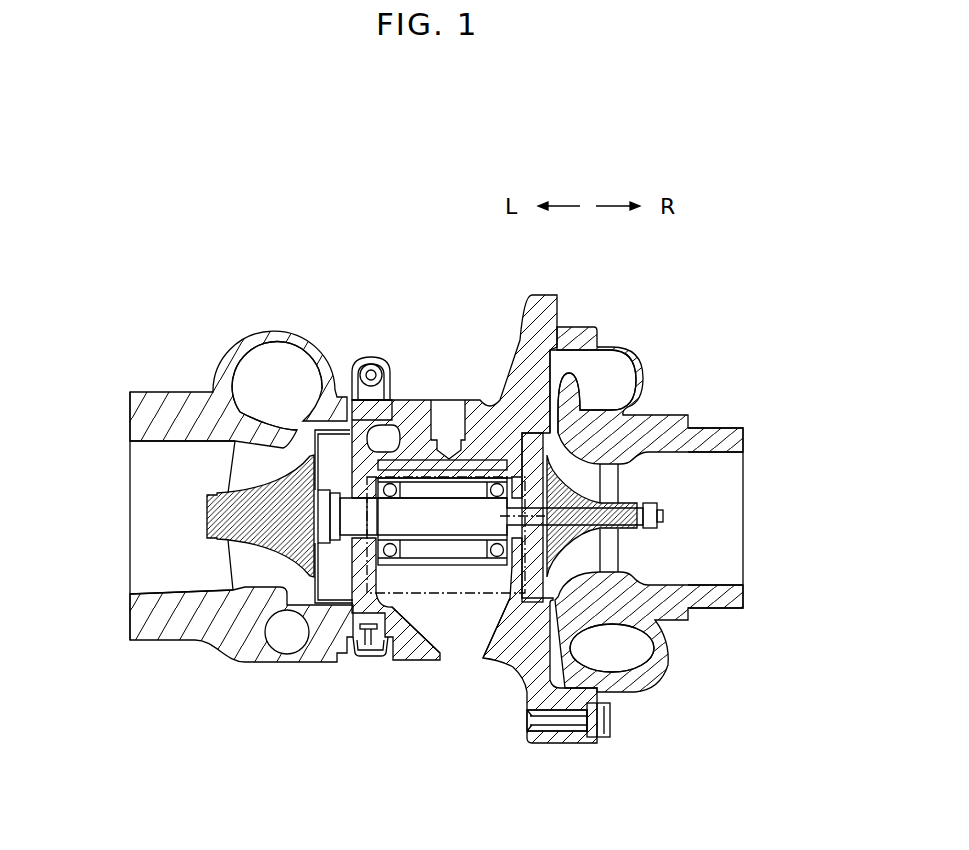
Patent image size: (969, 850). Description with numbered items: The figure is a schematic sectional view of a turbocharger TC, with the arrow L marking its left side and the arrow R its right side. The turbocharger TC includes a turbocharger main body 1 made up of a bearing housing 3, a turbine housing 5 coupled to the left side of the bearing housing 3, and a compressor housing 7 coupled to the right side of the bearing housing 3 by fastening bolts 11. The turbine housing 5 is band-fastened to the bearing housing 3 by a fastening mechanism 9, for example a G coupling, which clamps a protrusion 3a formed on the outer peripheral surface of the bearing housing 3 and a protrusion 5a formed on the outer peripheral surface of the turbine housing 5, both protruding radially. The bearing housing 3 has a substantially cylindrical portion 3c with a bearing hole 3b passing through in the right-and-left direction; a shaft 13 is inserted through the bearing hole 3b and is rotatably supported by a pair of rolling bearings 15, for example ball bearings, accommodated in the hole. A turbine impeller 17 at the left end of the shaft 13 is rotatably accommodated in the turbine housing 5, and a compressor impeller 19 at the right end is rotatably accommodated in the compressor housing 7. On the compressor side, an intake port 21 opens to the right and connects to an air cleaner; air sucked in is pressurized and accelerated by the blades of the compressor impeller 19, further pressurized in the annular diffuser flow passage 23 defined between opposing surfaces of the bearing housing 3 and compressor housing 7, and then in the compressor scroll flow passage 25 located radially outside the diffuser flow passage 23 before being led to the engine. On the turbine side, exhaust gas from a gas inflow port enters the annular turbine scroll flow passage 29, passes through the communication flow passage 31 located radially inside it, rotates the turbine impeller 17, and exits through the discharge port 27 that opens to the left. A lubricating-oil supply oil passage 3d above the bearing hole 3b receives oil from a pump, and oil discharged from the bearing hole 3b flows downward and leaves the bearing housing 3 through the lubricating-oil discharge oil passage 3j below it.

The turbocharger TC is at (304, 148).
The turbocharger main body 1 is at (324, 220).
The bearing housing 3 is at (541, 294).
The protrusion 3a is at (371, 650).
The bearing hole 3b is at (478, 562).
The cylindrical portion 3c is at (520, 642).
The lubricating-oil supply oil passage 3d is at (491, 466).
The lubricating-oil discharge oil passage 3j is at (432, 548).
The turbine housing 5 is at (338, 396).
The protrusion 5a is at (362, 652).
The compressor housing 7 is at (573, 327).
The fastening mechanism 9 is at (393, 358).
The fastening bolts 11 is at (611, 725).
The shaft 13 is at (427, 505).
The rolling bearings 15 is at (474, 489).
The turbine impeller 17 is at (236, 586).
The compressor impeller 19 is at (620, 478).
The intake port 21 is at (746, 572).
The diffuser flow passage 23 is at (550, 400).
The compressor scroll flow passage 25 is at (607, 358).
The discharge port 27 is at (144, 443).
The turbine scroll flow passage 29 is at (270, 352).
The communication flow passage 31 is at (293, 425).